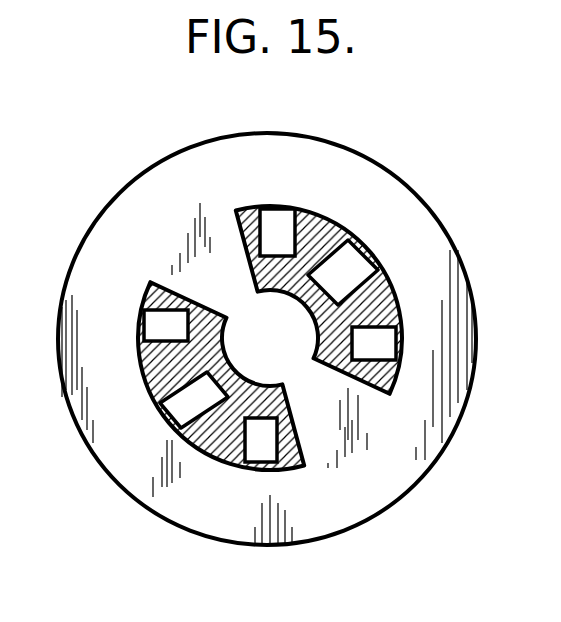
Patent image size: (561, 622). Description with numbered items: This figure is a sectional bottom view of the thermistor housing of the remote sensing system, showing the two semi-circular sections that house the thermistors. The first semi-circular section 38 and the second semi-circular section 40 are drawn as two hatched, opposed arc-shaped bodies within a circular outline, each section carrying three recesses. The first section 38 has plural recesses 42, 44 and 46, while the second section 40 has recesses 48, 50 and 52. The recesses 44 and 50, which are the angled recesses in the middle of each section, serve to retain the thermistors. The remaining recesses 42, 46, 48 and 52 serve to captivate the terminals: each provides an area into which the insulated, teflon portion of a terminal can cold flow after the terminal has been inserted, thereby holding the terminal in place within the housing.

The first semi-circular section 38 is at (136, 286).
The second semi-circular section 40 is at (414, 386).
The recess 42 is at (152, 330).
The recess 44 is at (165, 410).
The recess 46 is at (252, 452).
The recess 48 is at (278, 215).
The recess 50 is at (352, 255).
The recess 52 is at (382, 342).